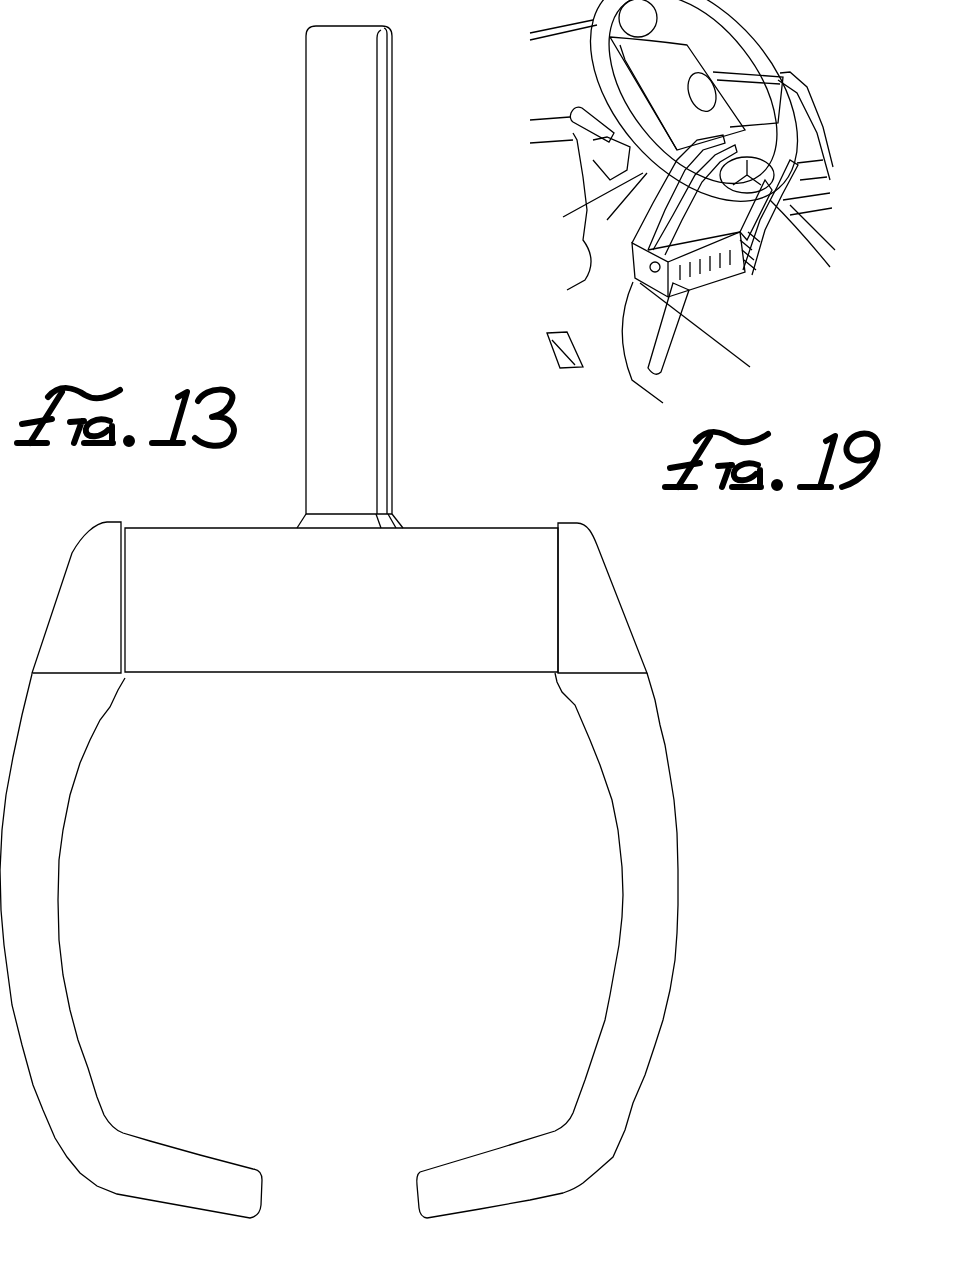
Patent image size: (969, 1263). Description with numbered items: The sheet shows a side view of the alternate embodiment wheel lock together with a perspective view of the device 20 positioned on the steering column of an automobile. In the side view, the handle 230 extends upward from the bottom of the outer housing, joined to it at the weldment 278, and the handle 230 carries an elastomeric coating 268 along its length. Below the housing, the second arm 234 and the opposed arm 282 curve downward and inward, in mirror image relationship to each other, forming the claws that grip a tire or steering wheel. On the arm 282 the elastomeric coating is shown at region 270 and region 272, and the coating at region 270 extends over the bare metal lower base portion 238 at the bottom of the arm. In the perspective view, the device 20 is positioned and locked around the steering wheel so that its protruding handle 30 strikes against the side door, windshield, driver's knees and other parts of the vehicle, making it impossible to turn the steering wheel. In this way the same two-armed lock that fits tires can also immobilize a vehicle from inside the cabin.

In FIG. 19, the steering wheel lock 20 is at (728, 283).
In FIG. 19, the lever 30 is at (662, 347).
In FIG. 13, the handle 230 is at (283, 155).
In FIG. 13, the second arm 234 is at (52, 975).
In FIG. 13, the base section 238 is at (605, 618).
In FIG. 13, the elastomeric coating 268 is at (322, 283).
In FIG. 13, the coating region 270 is at (645, 737).
In FIG. 13, the coating region 272 is at (543, 1190).
In FIG. 13, the weldment 278 is at (397, 520).
In FIG. 13, the arm 282 is at (678, 833).